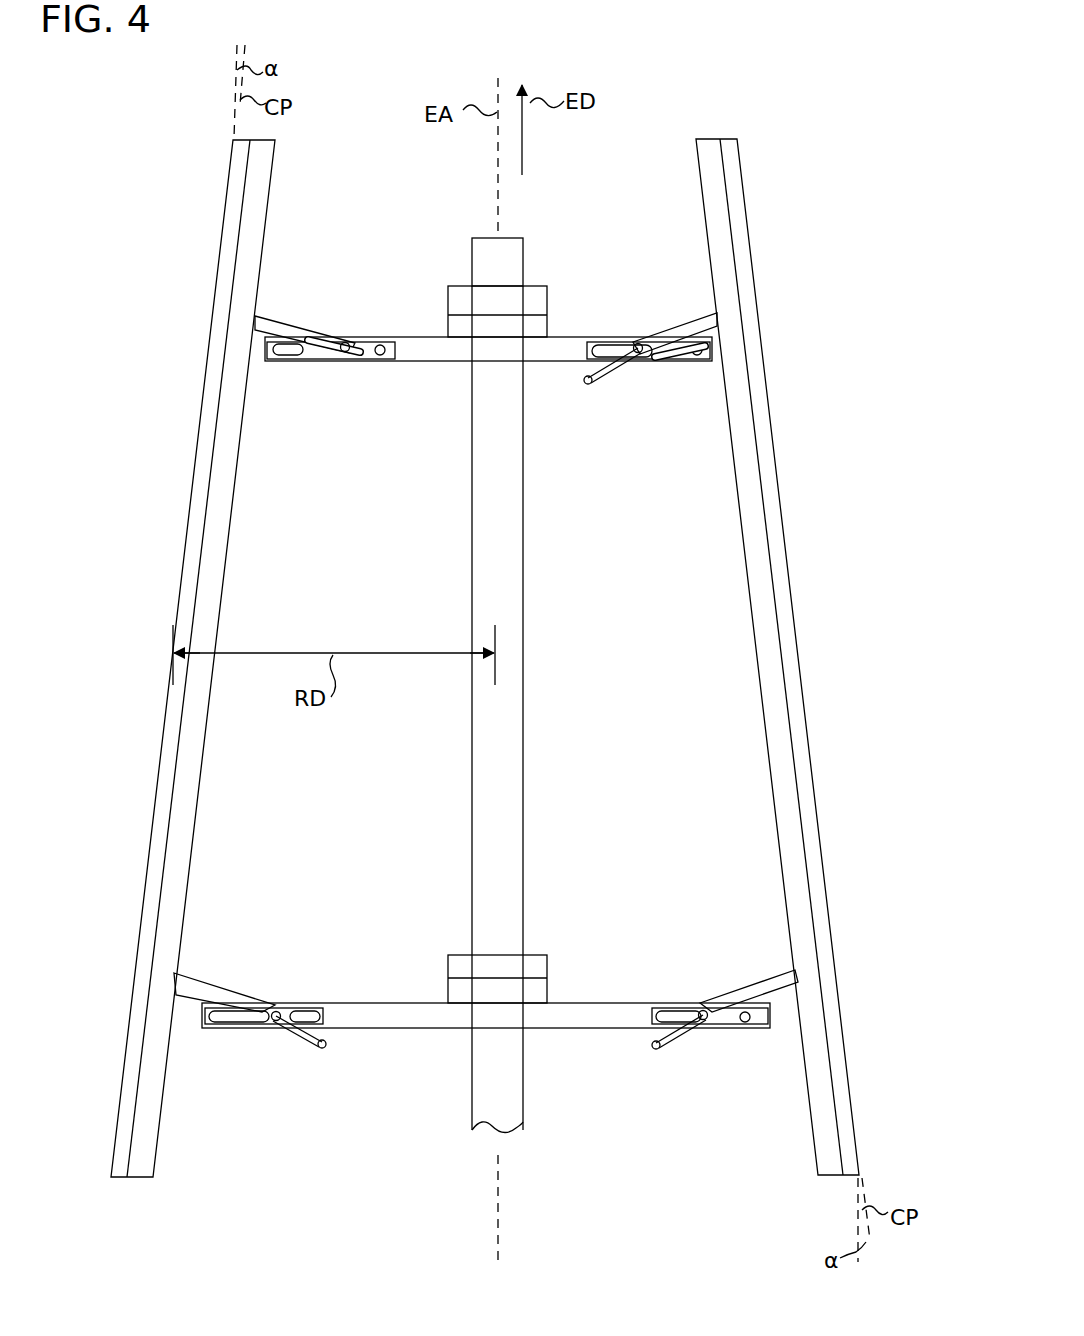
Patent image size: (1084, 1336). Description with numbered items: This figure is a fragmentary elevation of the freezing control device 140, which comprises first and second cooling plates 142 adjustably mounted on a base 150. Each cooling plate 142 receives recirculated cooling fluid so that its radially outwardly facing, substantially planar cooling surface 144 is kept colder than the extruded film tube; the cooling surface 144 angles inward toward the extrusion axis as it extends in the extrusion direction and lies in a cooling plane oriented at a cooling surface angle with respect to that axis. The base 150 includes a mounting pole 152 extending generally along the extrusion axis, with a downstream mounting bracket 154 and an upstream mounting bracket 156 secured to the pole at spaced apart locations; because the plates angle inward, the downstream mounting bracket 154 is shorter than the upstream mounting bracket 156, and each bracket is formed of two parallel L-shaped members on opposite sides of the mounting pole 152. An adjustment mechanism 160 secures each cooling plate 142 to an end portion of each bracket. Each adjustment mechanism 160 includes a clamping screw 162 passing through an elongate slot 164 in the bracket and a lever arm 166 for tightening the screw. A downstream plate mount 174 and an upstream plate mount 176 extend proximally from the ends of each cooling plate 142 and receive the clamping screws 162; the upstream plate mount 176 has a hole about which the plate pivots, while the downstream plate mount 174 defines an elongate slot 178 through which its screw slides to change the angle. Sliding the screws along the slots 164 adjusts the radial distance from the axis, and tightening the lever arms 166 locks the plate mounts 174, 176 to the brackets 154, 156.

The freezing control device 140 is at (275, 1186).
The cooling plate 142 is at (180, 567).
The cooling surface 144 is at (204, 465).
The base 150 is at (540, 250).
The mounting pole 152 is at (521, 606).
The downstream mounting bracket 154 is at (458, 361).
The upstream mounting bracket 156 is at (451, 1028).
The adjustment mechanism 160 is at (333, 312).
The clamping screw 162 is at (346, 350).
The elongate slot 164 is at (290, 356).
The lever arm 166 is at (591, 384).
The downstream plate mount 174 is at (269, 319).
The upstream plate mount 176 is at (186, 978).
The elongate slot 178 is at (328, 344).